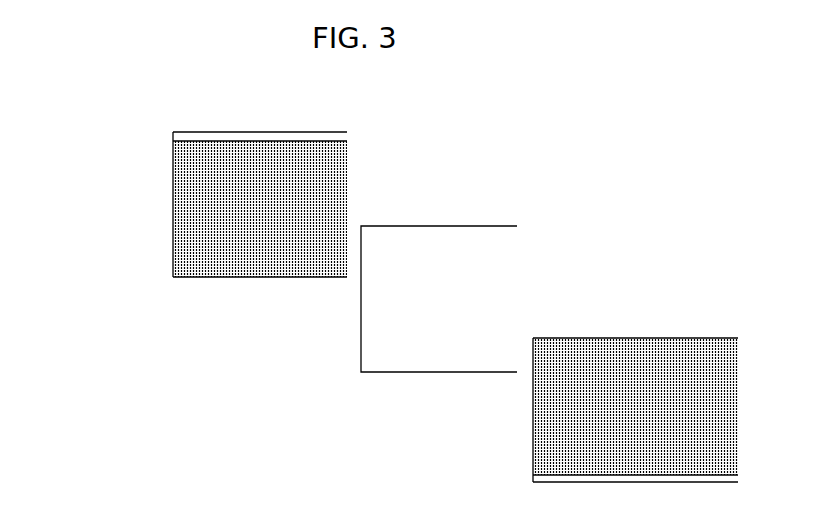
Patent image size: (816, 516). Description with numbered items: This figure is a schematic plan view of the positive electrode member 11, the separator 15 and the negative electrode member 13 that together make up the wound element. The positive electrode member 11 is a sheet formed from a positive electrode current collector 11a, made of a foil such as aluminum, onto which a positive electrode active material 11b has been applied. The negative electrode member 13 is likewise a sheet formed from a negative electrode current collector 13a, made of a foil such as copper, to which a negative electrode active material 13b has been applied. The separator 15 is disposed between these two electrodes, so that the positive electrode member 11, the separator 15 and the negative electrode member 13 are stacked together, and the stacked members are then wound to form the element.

The positive electrode member 11 is at (567, 410).
The positive electrode current collector 11a is at (538, 480).
The positive electrode active material 11b is at (538, 430).
The negative electrode member 13 is at (191, 195).
The negative electrode current collector 13a is at (177, 139).
The negative electrode active material 13b is at (177, 190).
The separator 15 is at (373, 318).